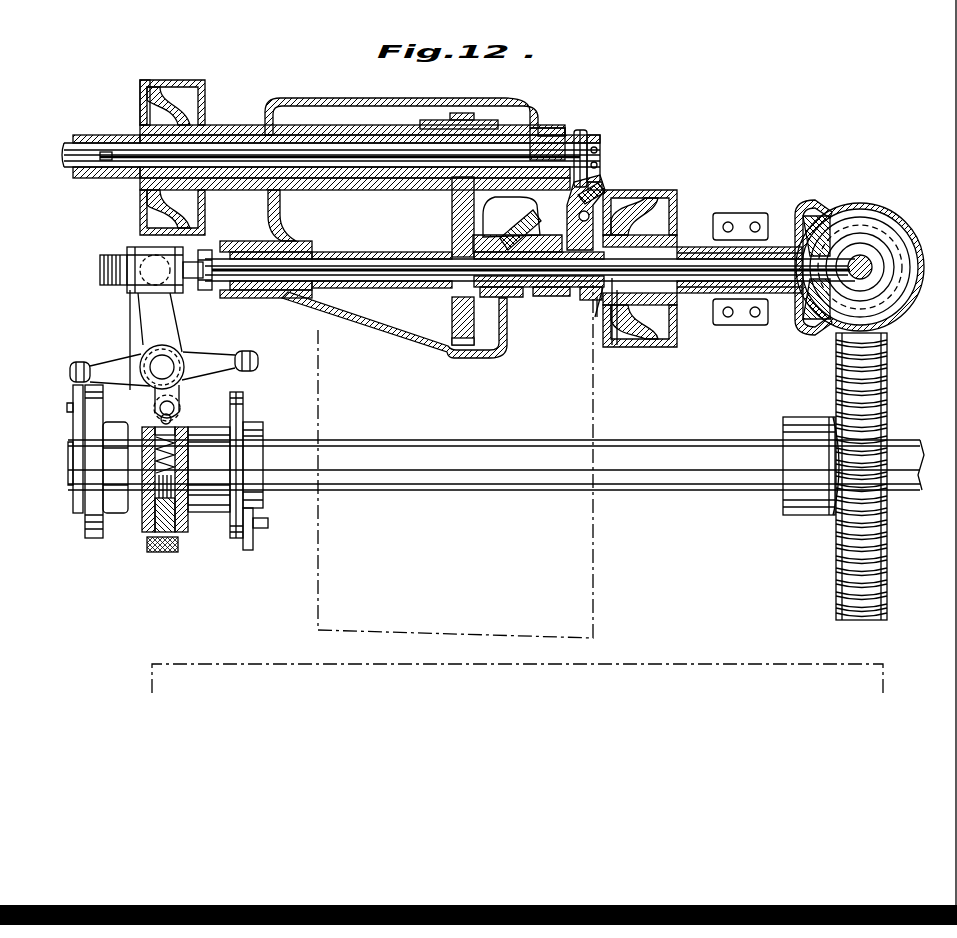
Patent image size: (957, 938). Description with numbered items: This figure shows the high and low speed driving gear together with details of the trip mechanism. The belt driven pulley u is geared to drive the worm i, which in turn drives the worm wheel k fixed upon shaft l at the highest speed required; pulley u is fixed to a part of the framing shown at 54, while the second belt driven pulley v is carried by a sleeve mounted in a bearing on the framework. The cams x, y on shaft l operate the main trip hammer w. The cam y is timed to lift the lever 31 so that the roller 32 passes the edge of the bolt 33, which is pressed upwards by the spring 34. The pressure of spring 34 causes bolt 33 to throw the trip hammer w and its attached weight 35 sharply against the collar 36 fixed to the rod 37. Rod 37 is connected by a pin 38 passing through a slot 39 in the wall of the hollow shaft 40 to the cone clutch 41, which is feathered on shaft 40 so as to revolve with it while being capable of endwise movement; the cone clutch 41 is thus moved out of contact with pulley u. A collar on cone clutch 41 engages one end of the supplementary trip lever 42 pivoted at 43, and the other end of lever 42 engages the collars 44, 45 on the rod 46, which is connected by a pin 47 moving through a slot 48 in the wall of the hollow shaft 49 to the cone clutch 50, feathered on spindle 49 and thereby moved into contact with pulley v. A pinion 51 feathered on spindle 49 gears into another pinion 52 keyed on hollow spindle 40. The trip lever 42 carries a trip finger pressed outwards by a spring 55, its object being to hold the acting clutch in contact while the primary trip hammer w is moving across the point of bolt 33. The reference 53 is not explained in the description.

The lever 31 is at (252, 368).
The roller 32 is at (180, 408).
The bolt 33 is at (157, 423).
The spring 34 is at (147, 482).
The weight 35 is at (135, 250).
The collar 36 is at (127, 260).
The rod 37 is at (103, 272).
The pin 38 is at (597, 317).
The slot 39 is at (595, 317).
The hollow shaft 40 is at (358, 288).
The cone clutch 41 is at (612, 345).
The supplementary trip lever 42 is at (600, 182).
The pivot 43 is at (568, 218).
The collar 44 is at (583, 130).
The collar 45 is at (598, 135).
The rod 46 is at (72, 160).
The pin 47 is at (118, 152).
The slot 48 is at (103, 150).
The hollow shaft 49 is at (343, 168).
The cone clutch 50 is at (150, 100).
The pinion 51 is at (445, 120).
The pinion 52 is at (452, 228).
The cover 53 is at (243, 130).
The framing part 54 is at (745, 232).
The spring 55 is at (596, 188).
The belt driven pulley v is at (202, 96).
The cam x is at (522, 202).
The main trip hammer w is at (170, 328).
The cam y is at (253, 540).
The belt driven pulley u is at (648, 347).
The worm i is at (858, 214).
The shaft l is at (462, 490).
The worm wheel k is at (832, 588).